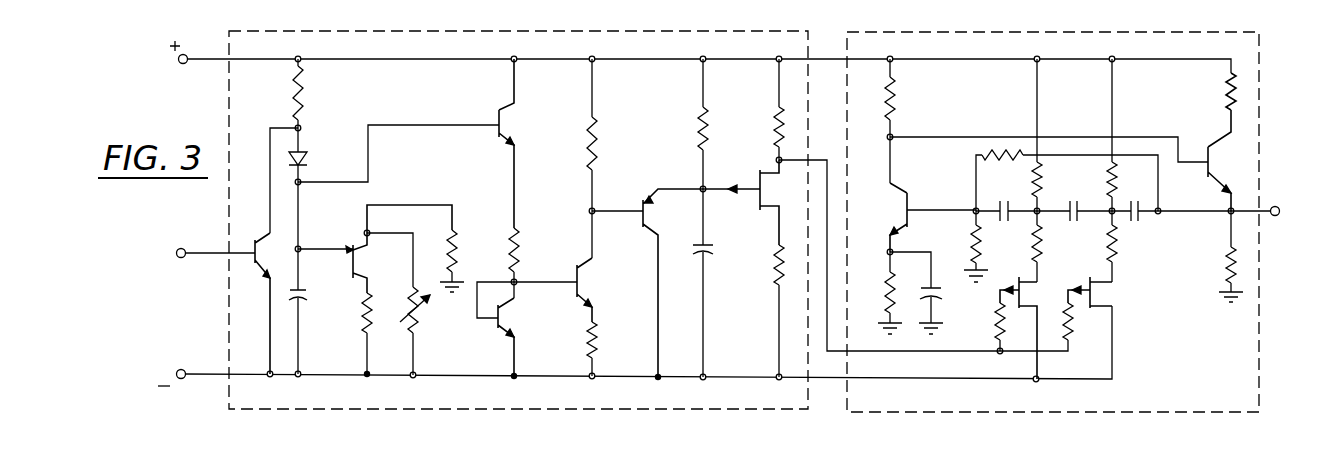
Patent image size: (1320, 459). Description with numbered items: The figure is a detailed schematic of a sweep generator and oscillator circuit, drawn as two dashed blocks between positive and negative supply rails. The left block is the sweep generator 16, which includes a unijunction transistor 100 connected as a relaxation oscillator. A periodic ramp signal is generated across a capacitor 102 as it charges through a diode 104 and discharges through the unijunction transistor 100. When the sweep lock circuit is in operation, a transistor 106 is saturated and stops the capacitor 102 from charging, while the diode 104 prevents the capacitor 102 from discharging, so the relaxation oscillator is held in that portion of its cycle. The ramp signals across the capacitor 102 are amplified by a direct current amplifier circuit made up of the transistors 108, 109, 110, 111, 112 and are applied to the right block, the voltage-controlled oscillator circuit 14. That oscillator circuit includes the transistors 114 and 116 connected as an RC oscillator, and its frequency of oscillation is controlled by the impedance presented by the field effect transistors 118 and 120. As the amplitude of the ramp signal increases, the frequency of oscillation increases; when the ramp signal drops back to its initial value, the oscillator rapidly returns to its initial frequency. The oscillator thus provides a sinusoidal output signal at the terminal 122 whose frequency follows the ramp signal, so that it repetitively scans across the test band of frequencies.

The voltage-controlled oscillator circuit 14 is at (995, 32).
The sweep generator 16 is at (517, 30).
The unijunction transistor 100 is at (362, 242).
The capacitor 102 is at (308, 289).
The diode 104 is at (305, 150).
The transistor 106 is at (262, 233).
The transistor 108 is at (505, 107).
The transistor 109 is at (502, 303).
The transistor 110 is at (580, 267).
The transistor 111 is at (650, 198).
The transistor 112 is at (760, 175).
The transistor 114 is at (903, 195).
The transistor 116 is at (1210, 157).
The field effect transistor 118 is at (1107, 297).
The field effect transistor 120 is at (1030, 300).
The terminal 122 is at (1276, 216).